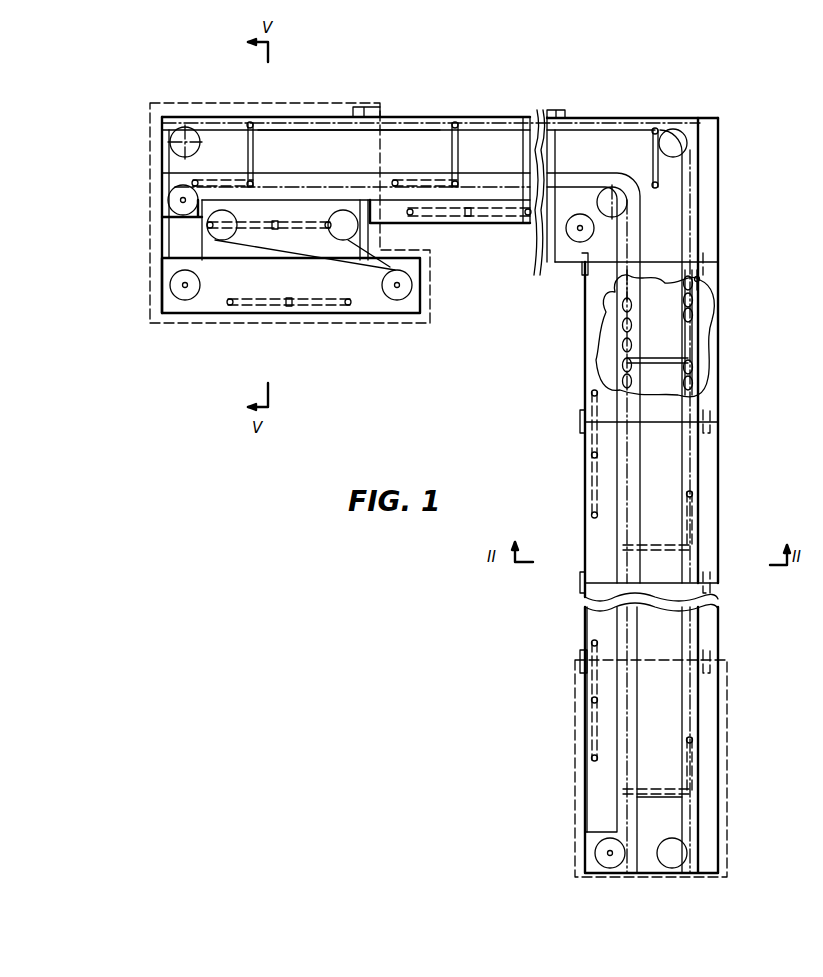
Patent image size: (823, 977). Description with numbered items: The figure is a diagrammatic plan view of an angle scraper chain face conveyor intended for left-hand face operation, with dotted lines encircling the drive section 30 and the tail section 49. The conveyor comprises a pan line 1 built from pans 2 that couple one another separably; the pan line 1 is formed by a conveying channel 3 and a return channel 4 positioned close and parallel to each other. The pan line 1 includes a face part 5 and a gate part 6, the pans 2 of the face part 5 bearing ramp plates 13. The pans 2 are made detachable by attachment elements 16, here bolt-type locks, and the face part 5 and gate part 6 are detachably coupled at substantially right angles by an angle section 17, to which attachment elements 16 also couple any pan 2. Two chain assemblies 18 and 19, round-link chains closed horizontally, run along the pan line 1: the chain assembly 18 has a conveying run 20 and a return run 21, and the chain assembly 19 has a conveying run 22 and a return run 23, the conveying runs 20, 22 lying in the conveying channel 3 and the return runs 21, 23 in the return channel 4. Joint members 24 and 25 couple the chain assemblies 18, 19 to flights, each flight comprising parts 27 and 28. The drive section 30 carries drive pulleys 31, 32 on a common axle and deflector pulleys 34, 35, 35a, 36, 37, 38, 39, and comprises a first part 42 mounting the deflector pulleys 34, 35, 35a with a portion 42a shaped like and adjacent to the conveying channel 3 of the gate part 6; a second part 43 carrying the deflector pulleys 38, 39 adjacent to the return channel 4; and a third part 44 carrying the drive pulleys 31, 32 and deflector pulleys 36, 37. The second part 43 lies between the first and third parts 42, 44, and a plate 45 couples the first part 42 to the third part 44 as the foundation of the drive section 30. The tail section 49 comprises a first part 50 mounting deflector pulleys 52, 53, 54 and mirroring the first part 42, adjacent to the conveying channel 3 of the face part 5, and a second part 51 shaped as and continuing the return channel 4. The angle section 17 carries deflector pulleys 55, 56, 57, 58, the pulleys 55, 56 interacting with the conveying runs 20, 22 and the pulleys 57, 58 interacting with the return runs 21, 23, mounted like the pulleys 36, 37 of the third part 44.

The pan line 1 is at (693, 110).
The pans 2 is at (688, 455).
The conveying channel 3 is at (655, 290).
The return channel 4 is at (387, 223).
The face part 5 is at (718, 635).
The gate part 6 is at (438, 112).
The ramp plates 13 is at (710, 525).
The attachment elements 16 is at (366, 108).
The angle section 17 is at (668, 181).
The chain assembly 18 is at (620, 345).
The chain assembly 19 is at (698, 298).
The conveying run 20 is at (628, 458).
The return run 21 is at (596, 295).
The conveying run 22 is at (688, 712).
The return run 23 is at (697, 279).
The joint member 24 is at (600, 392).
The joint member 25 is at (592, 515).
The flight part 27 is at (440, 190).
The flight part 28 is at (494, 218).
The drive section 30 is at (147, 170).
The drive pulley 31 is at (398, 300).
The drive pulley 32 is at (397, 285).
The deflector pulley 34 is at (183, 140).
The deflector pulley 35 is at (177, 208).
The deflector pulley 35a is at (183, 200).
The deflector pulley 36 is at (180, 298).
The deflector pulley 37 is at (185, 285).
The deflector pulley 38 is at (225, 243).
The deflector pulley 39 is at (343, 243).
The first part 42 is at (213, 118).
The portion 42a is at (275, 135).
The second part 43 is at (278, 240).
The third part 44 is at (240, 308).
The plate 45 is at (347, 205).
The tail section 49 is at (575, 742).
The first part 50 is at (692, 818).
The second part 51 is at (600, 775).
The deflector pulley 52 is at (670, 848).
The deflector pulley 53 is at (600, 848).
The deflector pulley 54 is at (610, 853).
The deflector pulley 55 is at (672, 142).
The deflector pulley 56 is at (620, 212).
The deflector pulley 57 is at (580, 226).
The deflector pulley 58 is at (580, 228).